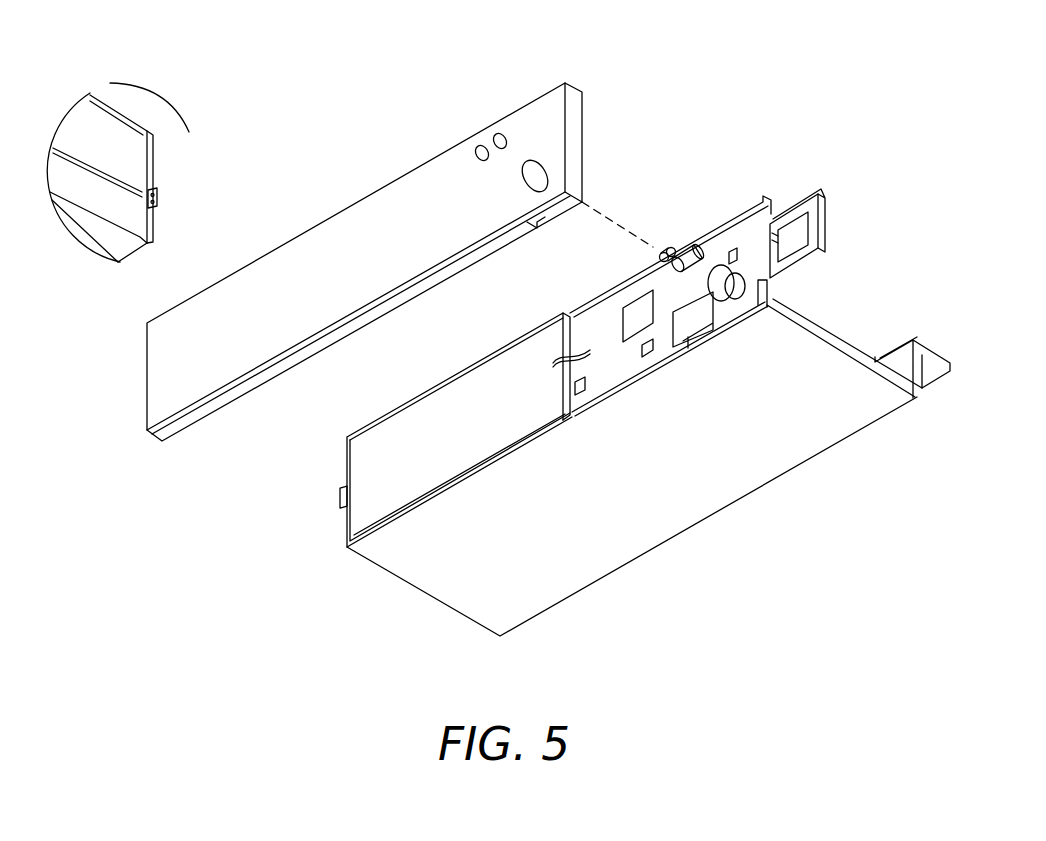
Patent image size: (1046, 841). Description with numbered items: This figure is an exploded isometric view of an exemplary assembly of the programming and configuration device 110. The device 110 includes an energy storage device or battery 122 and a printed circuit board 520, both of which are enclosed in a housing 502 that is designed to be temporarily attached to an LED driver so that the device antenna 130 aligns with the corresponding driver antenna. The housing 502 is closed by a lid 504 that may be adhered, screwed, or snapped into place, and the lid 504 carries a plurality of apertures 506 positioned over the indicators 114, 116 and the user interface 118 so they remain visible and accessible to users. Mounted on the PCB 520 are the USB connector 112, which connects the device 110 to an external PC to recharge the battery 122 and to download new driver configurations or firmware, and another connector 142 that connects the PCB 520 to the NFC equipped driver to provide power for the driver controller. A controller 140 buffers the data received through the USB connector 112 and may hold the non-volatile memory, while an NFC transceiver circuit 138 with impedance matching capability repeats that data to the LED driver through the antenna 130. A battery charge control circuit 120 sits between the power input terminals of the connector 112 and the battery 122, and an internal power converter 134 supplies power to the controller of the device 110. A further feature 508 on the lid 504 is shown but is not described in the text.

The programming and configuration device 110 is at (172, 532).
The USB connector 112 is at (708, 340).
The indicator 114 is at (667, 255).
The indicator 116 is at (683, 243).
The user interface 118 is at (742, 294).
The battery charge control circuit 120 is at (578, 383).
The energy storage device 122 is at (432, 412).
The device antenna 130 is at (825, 205).
The internal power converter 134 is at (655, 363).
The NFC transceiver circuit 138 is at (732, 250).
The controller 140 is at (628, 315).
The connector 142 is at (157, 196).
The housing 502 is at (702, 492).
The lid 504 is at (357, 235).
The apertures 506 is at (535, 160).
The tab 508 is at (517, 229).
The printed circuit board 520 is at (610, 365).